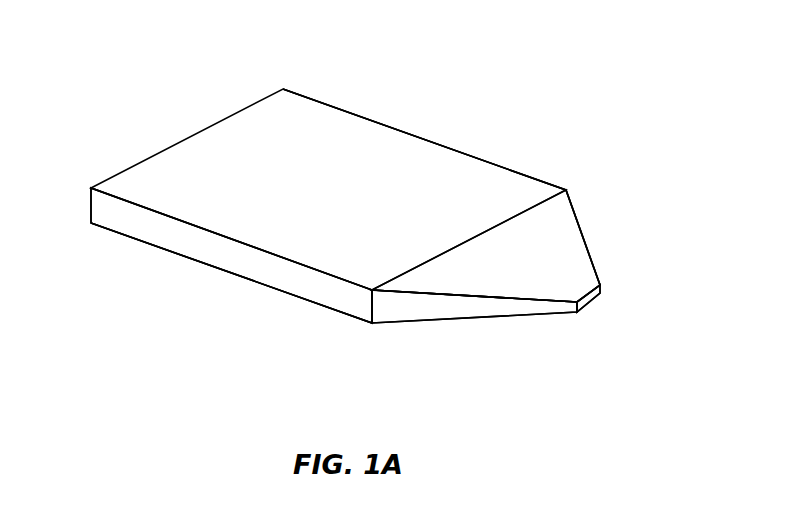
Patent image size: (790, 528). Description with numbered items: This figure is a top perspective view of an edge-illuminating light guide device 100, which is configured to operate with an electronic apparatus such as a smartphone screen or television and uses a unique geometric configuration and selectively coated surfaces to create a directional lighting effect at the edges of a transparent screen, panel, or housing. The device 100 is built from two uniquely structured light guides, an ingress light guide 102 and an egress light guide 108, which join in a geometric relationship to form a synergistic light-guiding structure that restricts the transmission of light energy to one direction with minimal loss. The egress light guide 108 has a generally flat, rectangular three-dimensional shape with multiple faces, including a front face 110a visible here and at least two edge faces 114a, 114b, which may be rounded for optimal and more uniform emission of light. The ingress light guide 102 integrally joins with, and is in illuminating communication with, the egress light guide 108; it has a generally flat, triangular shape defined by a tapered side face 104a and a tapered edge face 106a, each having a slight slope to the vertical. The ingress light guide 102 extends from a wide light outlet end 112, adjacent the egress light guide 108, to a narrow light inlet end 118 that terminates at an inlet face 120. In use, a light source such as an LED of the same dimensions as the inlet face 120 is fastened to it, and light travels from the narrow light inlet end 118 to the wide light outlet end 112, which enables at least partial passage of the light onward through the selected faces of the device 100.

The edge-illuminating light guide device 100 is at (143, 72).
The ingress light guide 102 is at (448, 363).
The tapered side face 104a is at (512, 291).
The tapered edge face 106a is at (443, 305).
The egress light guide 108 is at (312, 312).
The front face 110a is at (308, 137).
The wide light outlet end 112 is at (573, 179).
The edge face 114a is at (218, 255).
The edge face 114b is at (475, 128).
The narrow light inlet end 118 is at (600, 263).
The inlet face 120 is at (588, 300).